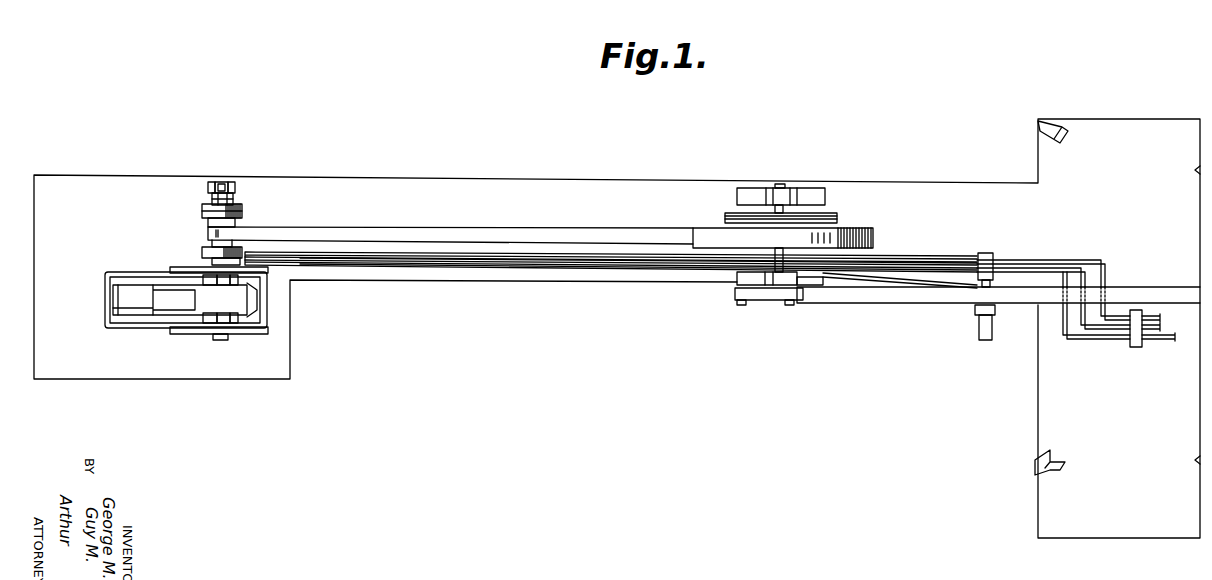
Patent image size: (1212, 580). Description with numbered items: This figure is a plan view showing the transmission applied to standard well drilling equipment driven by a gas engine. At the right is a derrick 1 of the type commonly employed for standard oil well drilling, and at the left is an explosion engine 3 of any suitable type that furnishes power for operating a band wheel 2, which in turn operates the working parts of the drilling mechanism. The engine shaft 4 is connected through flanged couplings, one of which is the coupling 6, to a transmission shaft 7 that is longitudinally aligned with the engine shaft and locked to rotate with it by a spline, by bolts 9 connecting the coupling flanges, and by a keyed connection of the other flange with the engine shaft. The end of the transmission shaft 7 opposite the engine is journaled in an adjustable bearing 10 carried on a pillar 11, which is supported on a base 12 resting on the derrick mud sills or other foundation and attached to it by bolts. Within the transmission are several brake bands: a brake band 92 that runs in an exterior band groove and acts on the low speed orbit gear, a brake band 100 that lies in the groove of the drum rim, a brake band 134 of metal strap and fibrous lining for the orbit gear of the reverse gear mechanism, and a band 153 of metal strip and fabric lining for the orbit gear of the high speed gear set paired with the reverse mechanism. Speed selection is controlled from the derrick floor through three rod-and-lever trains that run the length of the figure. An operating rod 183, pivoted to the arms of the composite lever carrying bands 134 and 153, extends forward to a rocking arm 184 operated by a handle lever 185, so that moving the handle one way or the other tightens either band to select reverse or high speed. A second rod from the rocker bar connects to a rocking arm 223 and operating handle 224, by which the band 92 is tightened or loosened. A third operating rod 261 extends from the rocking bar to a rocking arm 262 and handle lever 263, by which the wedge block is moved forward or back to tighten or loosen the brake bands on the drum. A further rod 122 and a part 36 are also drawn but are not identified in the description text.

The derrick 1 is at (1038, 119).
The band wheel 2 is at (855, 229).
The explosion engine 3 is at (250, 300).
The engine shaft 4 is at (223, 341).
The flanged coupling 6 is at (258, 262).
The transmission shaft 7 is at (222, 182).
The bolts 9 is at (242, 252).
The adjustable bearing 10 is at (232, 184).
The pillar 11 is at (212, 184).
The base 12 is at (210, 197).
The sleeve 36 is at (208, 240).
The brake band 92 is at (202, 214).
The brake band 100 is at (242, 211).
The rod 122 is at (640, 262).
The brake band 134 is at (232, 240).
The band 153 is at (202, 252).
The operating rod 183 is at (542, 259).
The rocking arm 184 is at (1110, 277).
The handle lever 185 is at (1148, 315).
The rocking arm 223 is at (1107, 236).
The operating handle 224 is at (1128, 340).
The operating rod 261 is at (453, 264).
The rocking arm 262 is at (1062, 325).
The handle lever 263 is at (1145, 341).